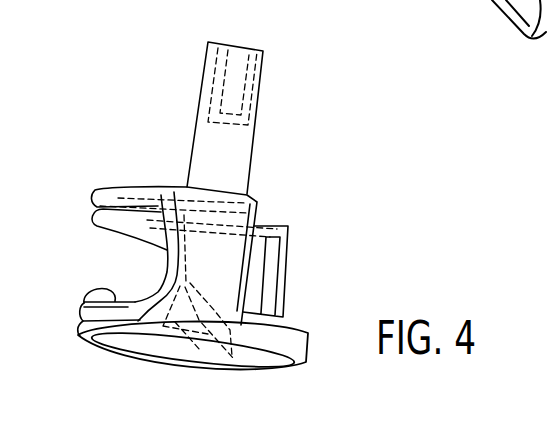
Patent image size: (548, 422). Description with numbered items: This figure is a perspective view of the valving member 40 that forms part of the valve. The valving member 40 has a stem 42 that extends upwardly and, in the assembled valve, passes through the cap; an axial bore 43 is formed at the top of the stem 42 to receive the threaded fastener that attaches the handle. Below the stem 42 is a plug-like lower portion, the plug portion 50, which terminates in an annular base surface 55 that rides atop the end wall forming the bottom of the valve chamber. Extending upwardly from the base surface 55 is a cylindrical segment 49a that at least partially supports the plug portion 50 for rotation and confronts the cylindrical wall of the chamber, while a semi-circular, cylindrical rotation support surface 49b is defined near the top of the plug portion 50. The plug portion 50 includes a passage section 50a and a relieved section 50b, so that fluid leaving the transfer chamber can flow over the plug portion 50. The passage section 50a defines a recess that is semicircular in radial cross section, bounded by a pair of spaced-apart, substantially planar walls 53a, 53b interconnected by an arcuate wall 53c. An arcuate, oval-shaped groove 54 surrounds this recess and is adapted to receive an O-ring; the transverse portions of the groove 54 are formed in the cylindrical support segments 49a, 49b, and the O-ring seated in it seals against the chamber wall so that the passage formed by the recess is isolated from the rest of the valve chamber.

The valving member 40 is at (332, 198).
The stem 42 is at (242, 158).
The axial bore 43 is at (246, 64).
The cylindrical segment 49a is at (295, 337).
The rotation support surface 49b is at (96, 190).
The plug portion 50 is at (330, 278).
The passage section 50a is at (148, 186).
The relieved section 50b is at (289, 253).
The planar wall 53a is at (115, 222).
The planar wall 53b is at (98, 289).
The arcuate wall 53c is at (160, 257).
The groove 54 is at (82, 306).
The base surface 55 is at (82, 338).